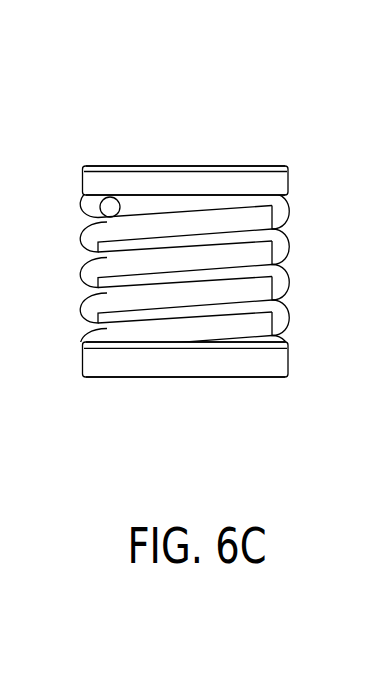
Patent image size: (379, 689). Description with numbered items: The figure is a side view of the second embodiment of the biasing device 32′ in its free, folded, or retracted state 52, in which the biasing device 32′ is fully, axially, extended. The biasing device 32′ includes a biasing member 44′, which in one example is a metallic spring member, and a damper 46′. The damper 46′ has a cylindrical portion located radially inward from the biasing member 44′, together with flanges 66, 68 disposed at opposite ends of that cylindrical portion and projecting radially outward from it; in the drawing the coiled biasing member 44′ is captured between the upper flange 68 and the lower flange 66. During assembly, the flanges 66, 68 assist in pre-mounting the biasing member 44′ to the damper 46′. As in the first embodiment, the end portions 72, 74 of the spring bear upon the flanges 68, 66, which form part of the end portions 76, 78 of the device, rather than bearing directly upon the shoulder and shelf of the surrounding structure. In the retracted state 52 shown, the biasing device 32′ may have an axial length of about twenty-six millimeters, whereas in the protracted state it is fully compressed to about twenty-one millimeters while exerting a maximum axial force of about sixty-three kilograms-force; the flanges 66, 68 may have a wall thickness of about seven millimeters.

The biasing device 32′ is at (242, 128).
The biasing member 44′ is at (282, 253).
The damper 46′ is at (175, 392).
The retracted state 52 is at (181, 115).
The flange 66 is at (288, 355).
The flange 68 is at (81, 180).
The end portion 72 is at (150, 193).
The end portion 74 is at (108, 343).
The end portion 76 is at (267, 165).
The end portion 78 is at (235, 376).